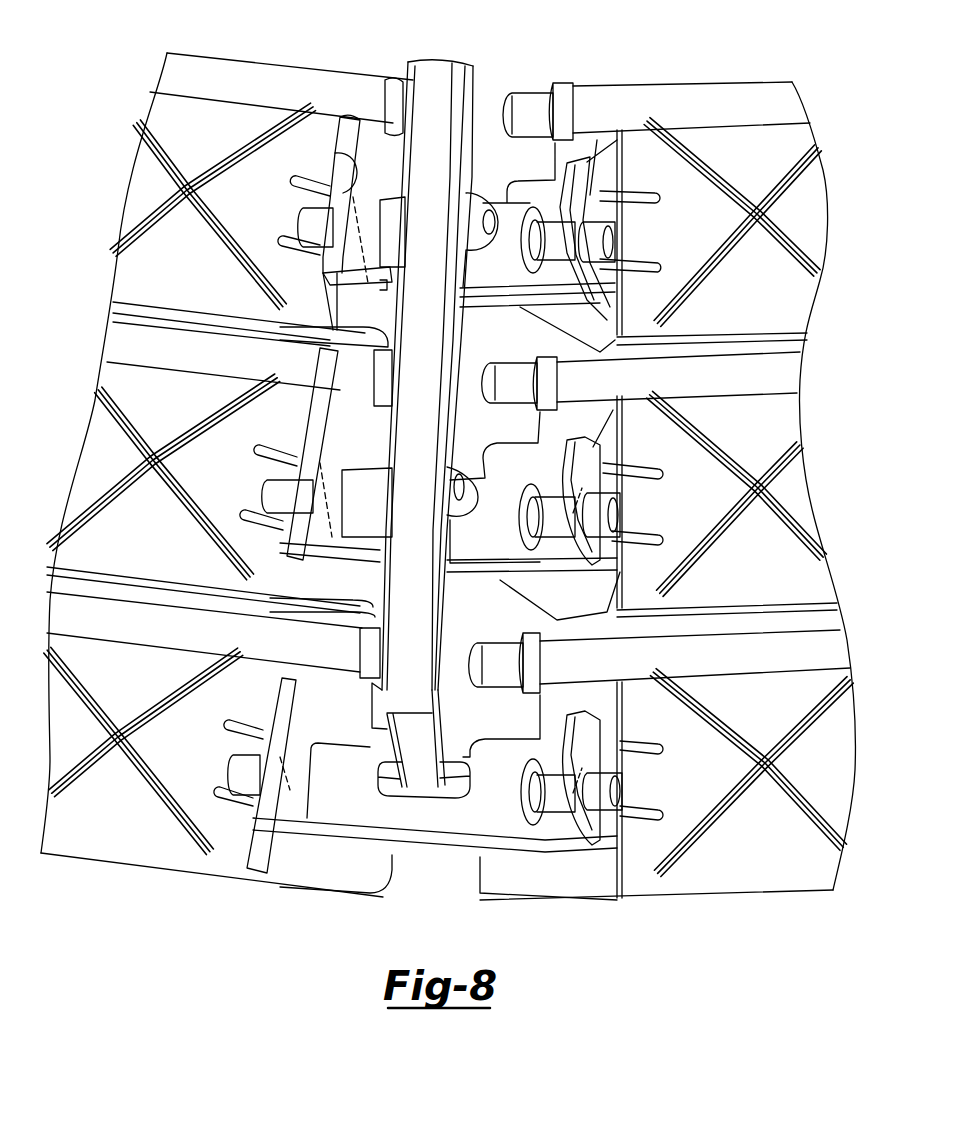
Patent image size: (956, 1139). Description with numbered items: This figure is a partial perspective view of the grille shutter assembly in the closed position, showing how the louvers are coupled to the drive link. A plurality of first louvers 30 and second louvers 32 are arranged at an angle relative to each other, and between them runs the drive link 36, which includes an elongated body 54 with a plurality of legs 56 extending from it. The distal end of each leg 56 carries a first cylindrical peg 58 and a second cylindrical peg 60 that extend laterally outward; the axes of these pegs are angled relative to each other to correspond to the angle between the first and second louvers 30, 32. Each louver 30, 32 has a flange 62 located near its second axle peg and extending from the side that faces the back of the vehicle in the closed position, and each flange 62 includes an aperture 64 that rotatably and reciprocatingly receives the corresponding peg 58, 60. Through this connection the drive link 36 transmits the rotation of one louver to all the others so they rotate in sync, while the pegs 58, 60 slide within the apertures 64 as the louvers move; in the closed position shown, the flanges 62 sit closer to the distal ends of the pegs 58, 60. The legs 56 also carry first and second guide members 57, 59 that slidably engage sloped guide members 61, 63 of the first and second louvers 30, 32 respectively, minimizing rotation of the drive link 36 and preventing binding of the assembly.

The first louver 30 is at (760, 296).
The second louver 32 is at (140, 282).
The drive link 36 is at (433, 93).
The elongated body 54 is at (413, 456).
The leg 56 is at (410, 748).
The first guide member 57 is at (567, 288).
The first cylindrical peg 58 is at (614, 240).
The second guide member 59 is at (378, 290).
The second cylindrical peg 60 is at (302, 221).
The sloped guide member 61 is at (562, 293).
The flange 62 is at (333, 205).
The sloped guide member 63 is at (362, 278).
The aperture 64 is at (279, 787).